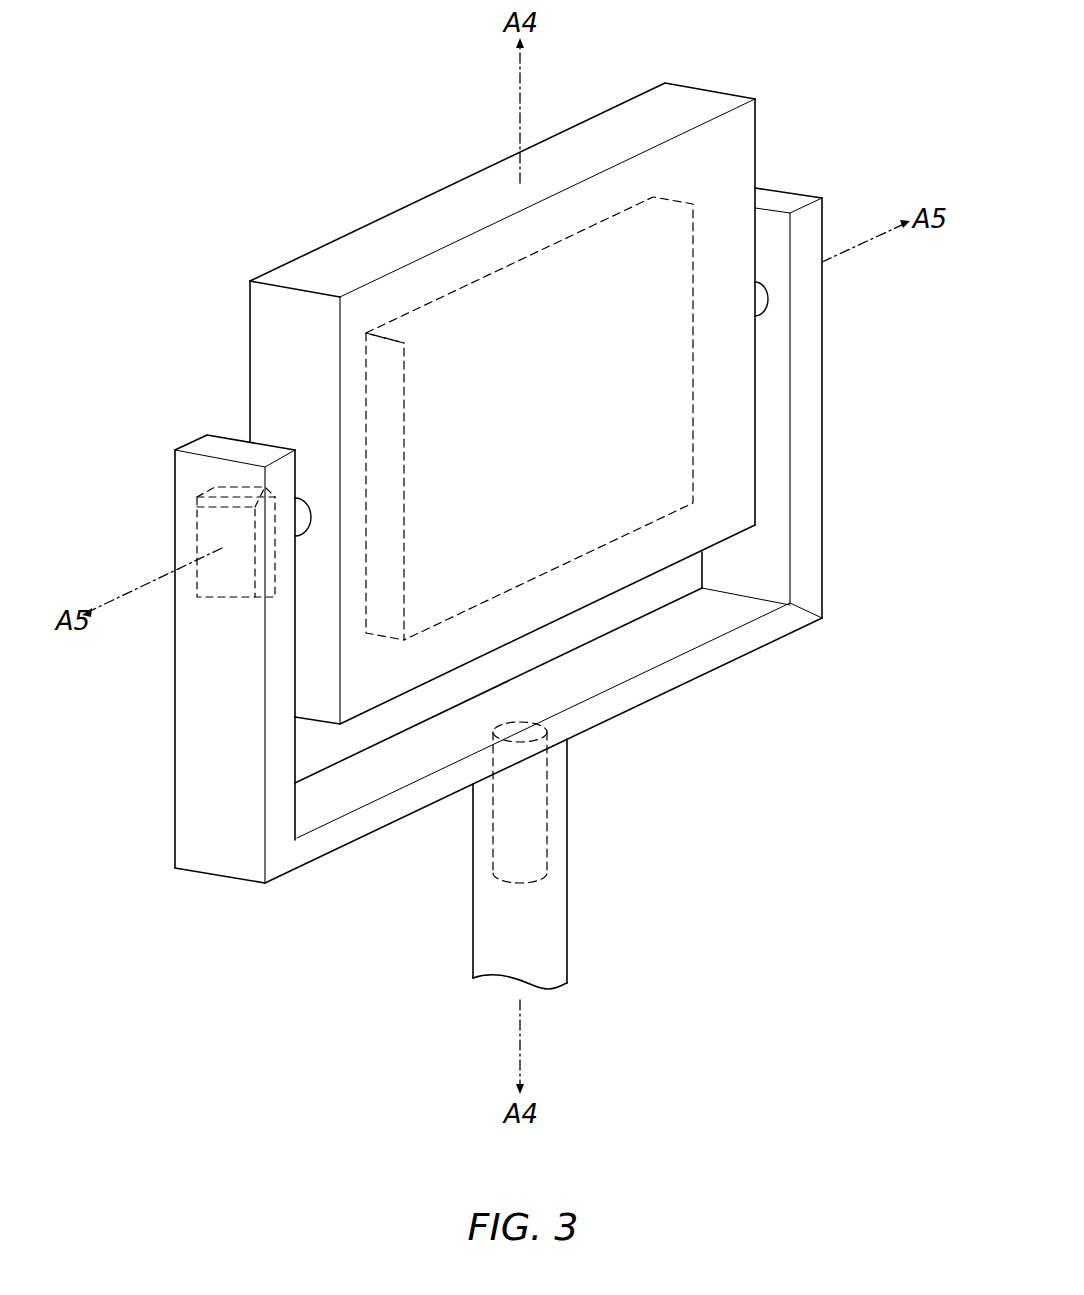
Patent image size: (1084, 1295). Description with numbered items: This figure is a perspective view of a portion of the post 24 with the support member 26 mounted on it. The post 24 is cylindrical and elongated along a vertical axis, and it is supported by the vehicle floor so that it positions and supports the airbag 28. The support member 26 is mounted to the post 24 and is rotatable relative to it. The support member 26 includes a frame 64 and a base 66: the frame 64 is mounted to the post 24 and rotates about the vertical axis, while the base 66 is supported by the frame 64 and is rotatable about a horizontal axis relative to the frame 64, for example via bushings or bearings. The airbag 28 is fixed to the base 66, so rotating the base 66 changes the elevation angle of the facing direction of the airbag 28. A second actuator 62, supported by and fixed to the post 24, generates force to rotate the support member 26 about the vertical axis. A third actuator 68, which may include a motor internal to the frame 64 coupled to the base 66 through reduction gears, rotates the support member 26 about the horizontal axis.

The post 24 is at (568, 912).
The support member 26 is at (440, 535).
The airbag 28 is at (612, 335).
The second actuator 62 is at (550, 805).
The frame 64 is at (203, 781).
The base 66 is at (358, 260).
The third actuator 68 is at (205, 485).